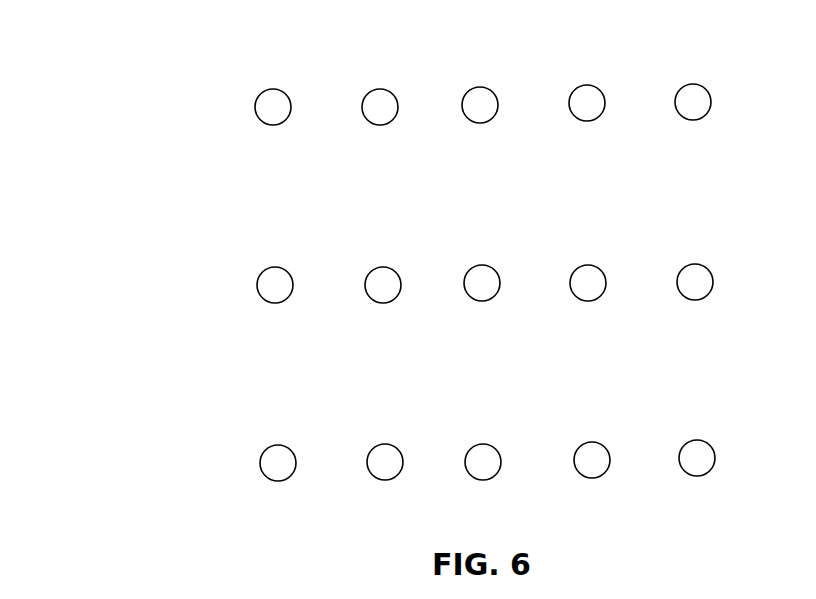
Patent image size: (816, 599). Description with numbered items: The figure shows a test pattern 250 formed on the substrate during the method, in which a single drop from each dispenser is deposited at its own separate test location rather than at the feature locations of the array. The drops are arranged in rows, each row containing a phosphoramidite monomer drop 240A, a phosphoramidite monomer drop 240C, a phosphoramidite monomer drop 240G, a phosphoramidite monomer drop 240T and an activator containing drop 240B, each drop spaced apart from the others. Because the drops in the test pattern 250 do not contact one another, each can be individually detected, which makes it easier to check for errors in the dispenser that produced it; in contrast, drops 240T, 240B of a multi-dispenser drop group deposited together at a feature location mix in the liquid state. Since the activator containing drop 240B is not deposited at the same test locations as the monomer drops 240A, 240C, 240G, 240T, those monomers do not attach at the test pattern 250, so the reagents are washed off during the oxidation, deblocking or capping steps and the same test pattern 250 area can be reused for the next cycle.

The test pattern 250 is at (188, 296).
The phosphoramidite monomer drop A 240A is at (273, 105).
The phosphoramidite monomer drop C 240C is at (380, 105).
The phosphoramidite monomer drop G 240G is at (480, 103).
The phosphoramidite monomer drop T 240T is at (587, 101).
The activator containing drop 240B is at (693, 100).